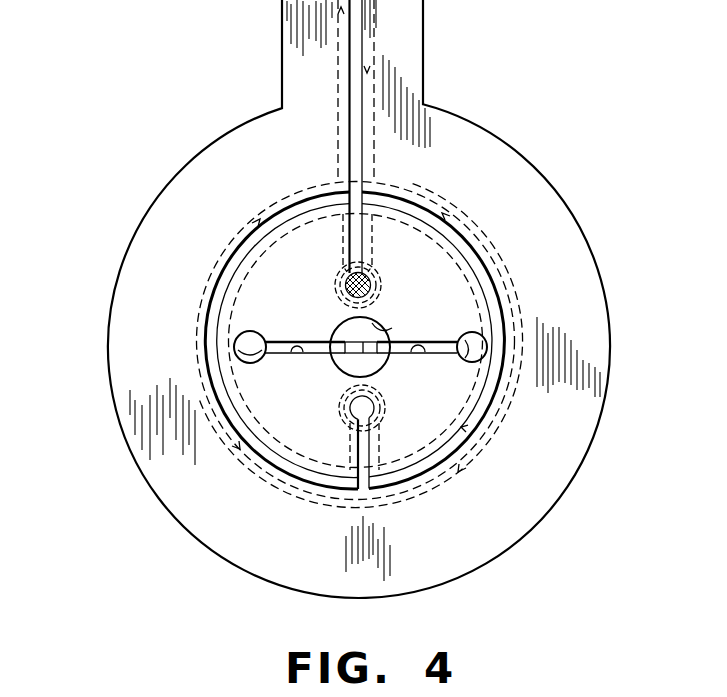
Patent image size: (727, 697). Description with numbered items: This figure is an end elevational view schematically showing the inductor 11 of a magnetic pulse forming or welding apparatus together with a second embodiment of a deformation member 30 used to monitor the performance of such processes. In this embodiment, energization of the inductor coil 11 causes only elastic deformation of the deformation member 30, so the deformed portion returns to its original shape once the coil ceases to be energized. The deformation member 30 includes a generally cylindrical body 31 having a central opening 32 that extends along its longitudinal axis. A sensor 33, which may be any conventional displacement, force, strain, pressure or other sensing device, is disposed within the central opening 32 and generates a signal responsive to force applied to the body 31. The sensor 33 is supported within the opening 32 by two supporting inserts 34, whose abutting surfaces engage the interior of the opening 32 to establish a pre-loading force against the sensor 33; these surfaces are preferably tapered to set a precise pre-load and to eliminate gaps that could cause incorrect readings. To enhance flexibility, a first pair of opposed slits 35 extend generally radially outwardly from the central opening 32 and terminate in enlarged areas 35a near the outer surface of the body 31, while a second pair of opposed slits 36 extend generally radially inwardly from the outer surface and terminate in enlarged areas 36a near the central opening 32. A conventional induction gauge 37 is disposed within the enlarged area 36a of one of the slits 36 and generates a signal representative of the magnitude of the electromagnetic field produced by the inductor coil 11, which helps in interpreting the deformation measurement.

The inductor 11 is at (168, 480).
The deformation member 30 is at (486, 278).
The body 31 is at (254, 318).
The opening 32 is at (393, 322).
The sensor 33 is at (365, 350).
The supporting inserts 34 is at (350, 330).
The first pair of opposed slits 35 is at (290, 344).
The enlarged area 35a is at (233, 345).
The second pair of opposed slits 36 is at (360, 241).
The enlarged area 36a is at (375, 277).
The induction gauge 37 is at (337, 282).